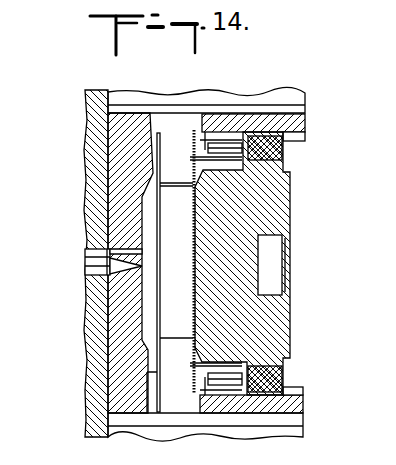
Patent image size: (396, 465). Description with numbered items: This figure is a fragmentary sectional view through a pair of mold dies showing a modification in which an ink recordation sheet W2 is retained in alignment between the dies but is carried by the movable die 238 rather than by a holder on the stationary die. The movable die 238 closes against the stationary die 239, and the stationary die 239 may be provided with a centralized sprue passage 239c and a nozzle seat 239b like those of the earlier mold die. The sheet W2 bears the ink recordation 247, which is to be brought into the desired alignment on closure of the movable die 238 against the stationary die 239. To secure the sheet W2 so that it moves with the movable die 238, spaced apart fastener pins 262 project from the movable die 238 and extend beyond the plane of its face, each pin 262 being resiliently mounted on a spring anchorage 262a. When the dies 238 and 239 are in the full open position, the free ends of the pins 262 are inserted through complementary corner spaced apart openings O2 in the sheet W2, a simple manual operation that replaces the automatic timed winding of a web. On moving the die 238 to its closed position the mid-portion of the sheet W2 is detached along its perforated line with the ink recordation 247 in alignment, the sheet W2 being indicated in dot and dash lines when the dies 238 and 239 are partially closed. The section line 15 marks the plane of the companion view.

The section line 15- 15 is at (176, 125).
The movable mold die 238 is at (265, 206).
The stationary mold die 239 is at (87, 263).
The nozzle seat 239b is at (86, 261).
The sprue passage 239c is at (100, 266).
The ink recordation 247 is at (193, 267).
The fastener pin 262 is at (207, 142).
The spring anchorage 262a is at (308, 123).
The fastener opening O2 is at (205, 152).
The ink recordation sheet W2 is at (192, 319).